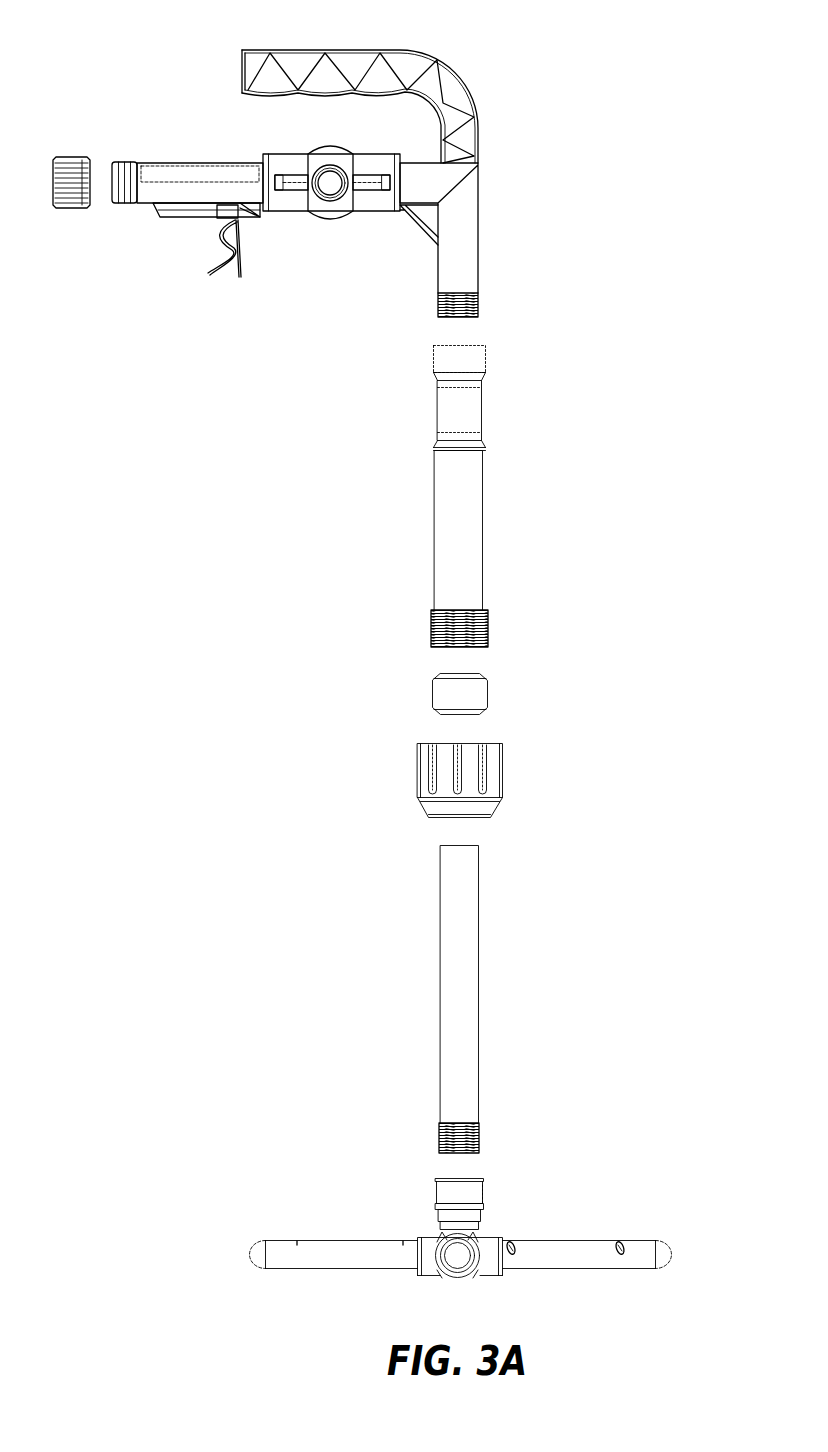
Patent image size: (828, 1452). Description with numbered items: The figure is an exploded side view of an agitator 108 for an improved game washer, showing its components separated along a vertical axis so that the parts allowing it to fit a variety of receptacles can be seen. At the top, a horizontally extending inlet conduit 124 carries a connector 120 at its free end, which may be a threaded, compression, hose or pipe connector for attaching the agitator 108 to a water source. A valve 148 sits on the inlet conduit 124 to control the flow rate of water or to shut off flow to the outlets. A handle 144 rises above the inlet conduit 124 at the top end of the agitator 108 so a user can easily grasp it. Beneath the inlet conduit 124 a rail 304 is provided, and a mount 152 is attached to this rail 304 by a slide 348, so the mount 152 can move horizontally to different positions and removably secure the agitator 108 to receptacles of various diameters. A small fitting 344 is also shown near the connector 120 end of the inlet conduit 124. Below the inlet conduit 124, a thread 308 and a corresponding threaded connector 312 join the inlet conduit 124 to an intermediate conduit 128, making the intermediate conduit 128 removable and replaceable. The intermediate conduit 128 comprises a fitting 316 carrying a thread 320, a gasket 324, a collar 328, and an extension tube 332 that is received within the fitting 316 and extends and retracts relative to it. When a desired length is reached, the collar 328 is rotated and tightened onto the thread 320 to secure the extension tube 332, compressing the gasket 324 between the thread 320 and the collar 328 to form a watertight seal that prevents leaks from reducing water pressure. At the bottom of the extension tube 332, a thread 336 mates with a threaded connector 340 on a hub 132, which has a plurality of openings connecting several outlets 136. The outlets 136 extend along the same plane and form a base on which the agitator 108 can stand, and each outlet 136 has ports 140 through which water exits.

The agitator 108 is at (215, 772).
The connector 120 is at (68, 157).
The inlet conduit 124 is at (507, 190).
The intermediate conduit 128 is at (338, 695).
The hub 132 is at (487, 1275).
The outlet 136 is at (348, 1268).
The port 140 is at (650, 1210).
The handle 144 is at (378, 47).
The valve 148 is at (332, 218).
The mount 152 is at (213, 272).
The rail 304 is at (185, 218).
The thread 308 is at (480, 305).
The threaded connector 312 is at (485, 358).
The fitting 316 is at (433, 505).
The thread 320 is at (432, 632).
The gasket 324 is at (487, 700).
The collar 328 is at (417, 778).
The extension tube 332 is at (440, 998).
The thread 336 is at (478, 1142).
The threaded connector 340 is at (433, 1192).
The hose fitting 344 is at (125, 162).
The slide 348 is at (242, 217).